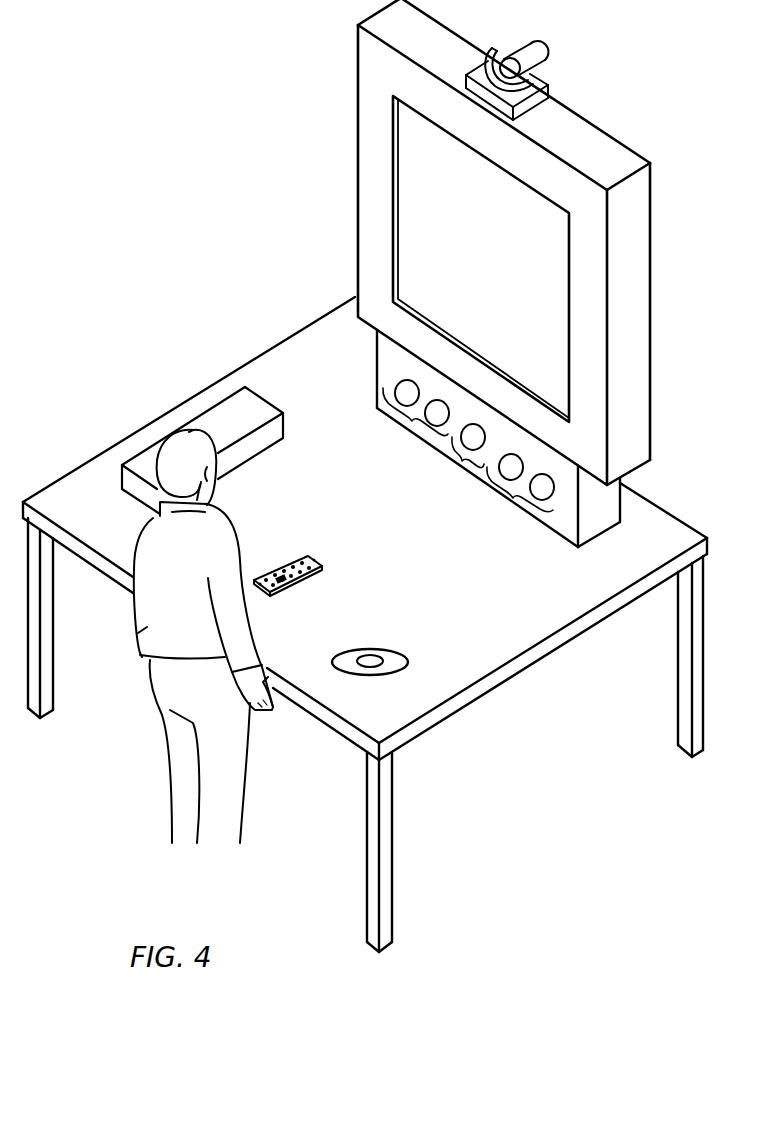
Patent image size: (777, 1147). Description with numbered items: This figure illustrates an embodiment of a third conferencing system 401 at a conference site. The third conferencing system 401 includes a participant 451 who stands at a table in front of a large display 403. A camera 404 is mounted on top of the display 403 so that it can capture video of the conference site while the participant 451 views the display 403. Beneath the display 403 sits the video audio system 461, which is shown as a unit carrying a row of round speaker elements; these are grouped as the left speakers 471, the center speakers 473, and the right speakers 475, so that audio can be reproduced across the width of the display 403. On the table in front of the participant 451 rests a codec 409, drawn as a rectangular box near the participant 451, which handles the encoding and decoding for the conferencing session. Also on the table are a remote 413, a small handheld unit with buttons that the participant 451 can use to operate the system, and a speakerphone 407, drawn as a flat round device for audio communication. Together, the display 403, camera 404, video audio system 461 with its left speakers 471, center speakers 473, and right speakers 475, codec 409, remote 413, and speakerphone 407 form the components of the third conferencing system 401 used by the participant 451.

The third conferencing system 401 is at (131, 58).
The display 403 is at (405, 215).
The camera 404 is at (532, 54).
The speakerphone 407 is at (387, 648).
The codec 409 is at (248, 457).
The remote 413 is at (308, 555).
The participant 451 is at (185, 438).
The video audio system 461 is at (423, 433).
The left speakers 471 is at (411, 421).
The center speakers 473 is at (461, 461).
The right speakers 475 is at (512, 498).